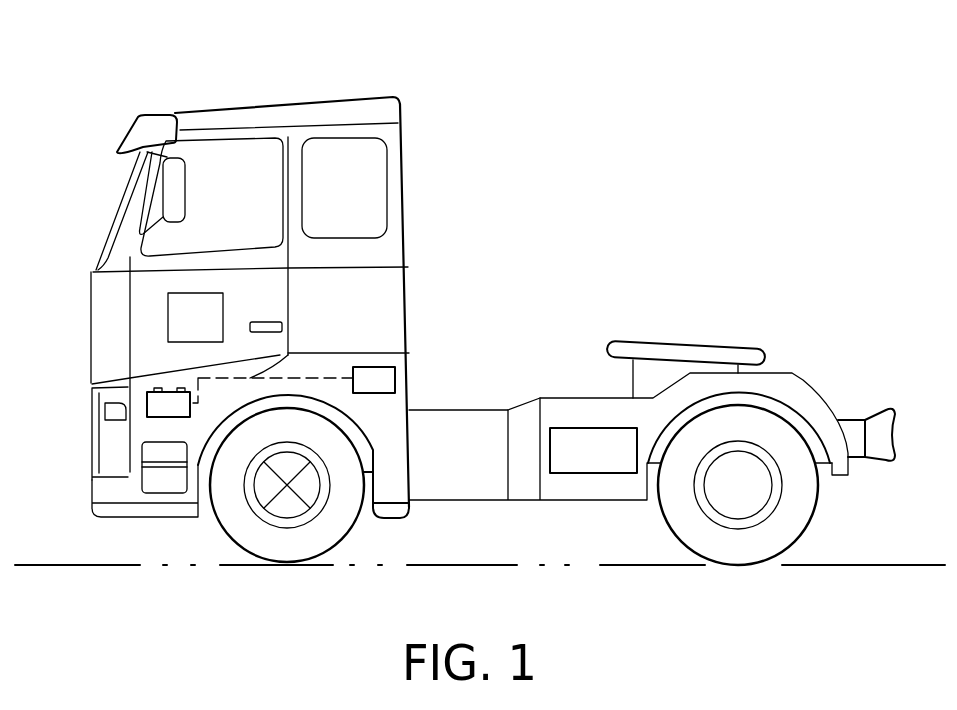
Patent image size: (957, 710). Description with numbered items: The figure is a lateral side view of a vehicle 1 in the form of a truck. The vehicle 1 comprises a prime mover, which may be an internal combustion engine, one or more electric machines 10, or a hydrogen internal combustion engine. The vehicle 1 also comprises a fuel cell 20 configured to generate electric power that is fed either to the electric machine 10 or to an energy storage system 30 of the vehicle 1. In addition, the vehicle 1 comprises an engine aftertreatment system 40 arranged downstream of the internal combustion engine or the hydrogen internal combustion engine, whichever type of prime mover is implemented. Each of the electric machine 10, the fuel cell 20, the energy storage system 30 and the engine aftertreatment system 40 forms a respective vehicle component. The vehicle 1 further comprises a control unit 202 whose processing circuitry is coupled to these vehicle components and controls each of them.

The vehicle 1 is at (176, 74).
The electric machine 10 is at (283, 506).
The fuel cell 20 is at (396, 380).
The energy storage system 30 is at (145, 412).
The engine aftertreatment system 40 is at (592, 474).
The control unit 202 is at (165, 332).